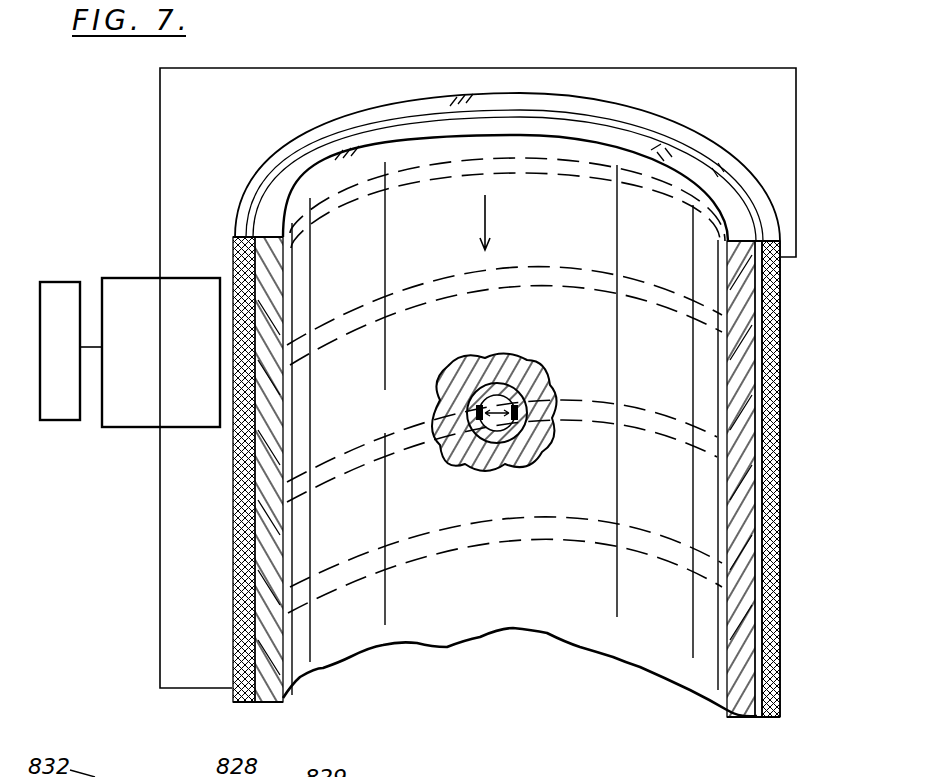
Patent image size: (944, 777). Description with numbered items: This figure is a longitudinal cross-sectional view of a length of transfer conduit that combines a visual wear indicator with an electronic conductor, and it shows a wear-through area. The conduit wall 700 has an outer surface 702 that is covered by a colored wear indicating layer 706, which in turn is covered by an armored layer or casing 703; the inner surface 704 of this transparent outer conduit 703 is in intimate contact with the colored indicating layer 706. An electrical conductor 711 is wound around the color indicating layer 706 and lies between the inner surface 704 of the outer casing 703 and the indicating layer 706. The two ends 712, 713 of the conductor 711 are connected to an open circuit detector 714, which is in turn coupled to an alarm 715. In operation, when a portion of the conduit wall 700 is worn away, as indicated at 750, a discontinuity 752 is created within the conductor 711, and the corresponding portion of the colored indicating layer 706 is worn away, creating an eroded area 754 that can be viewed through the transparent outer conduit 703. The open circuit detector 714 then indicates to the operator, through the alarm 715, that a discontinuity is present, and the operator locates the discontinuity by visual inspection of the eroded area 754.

The conduit wall 700 is at (737, 700).
The outer surface 702 is at (778, 701).
The armored layer or casing 703 is at (777, 535).
The inner surface 704 is at (755, 443).
The wear indicating layer 706 is at (772, 662).
The electrical conductor 711 is at (783, 383).
The end of conductor 712 is at (232, 703).
The end of conductor 713 is at (782, 258).
The open circuit detector 714 is at (120, 428).
The alarm 715 is at (62, 281).
The worn-away portion of conduit wall 750 is at (556, 232).
The discontinuity 752 is at (500, 430).
The eroded area 754 is at (500, 392).